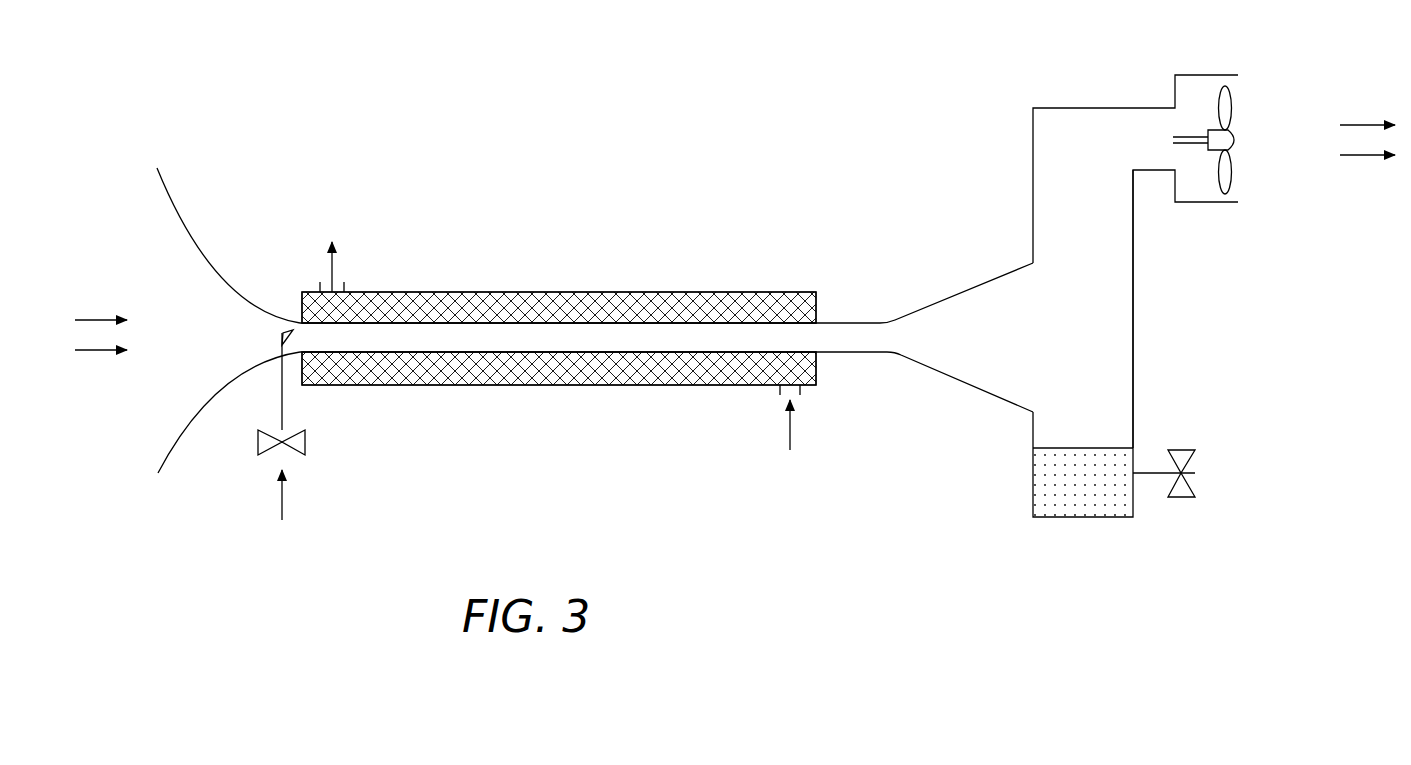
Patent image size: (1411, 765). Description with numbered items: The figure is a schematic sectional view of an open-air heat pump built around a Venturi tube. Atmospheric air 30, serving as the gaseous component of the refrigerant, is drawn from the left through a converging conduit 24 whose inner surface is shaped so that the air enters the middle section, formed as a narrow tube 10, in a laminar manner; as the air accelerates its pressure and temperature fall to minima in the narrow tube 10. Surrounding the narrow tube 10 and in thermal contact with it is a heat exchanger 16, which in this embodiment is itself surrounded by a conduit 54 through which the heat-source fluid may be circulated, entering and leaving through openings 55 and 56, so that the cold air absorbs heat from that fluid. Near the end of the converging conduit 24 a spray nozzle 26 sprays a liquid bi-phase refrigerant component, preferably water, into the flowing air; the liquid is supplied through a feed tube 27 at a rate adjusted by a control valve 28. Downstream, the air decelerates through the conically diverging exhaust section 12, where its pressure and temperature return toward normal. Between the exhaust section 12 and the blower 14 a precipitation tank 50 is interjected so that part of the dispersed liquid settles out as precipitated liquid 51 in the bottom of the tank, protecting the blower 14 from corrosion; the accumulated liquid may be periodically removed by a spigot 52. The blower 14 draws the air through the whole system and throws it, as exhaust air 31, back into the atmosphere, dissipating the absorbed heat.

The narrow tube 10 is at (856, 322).
The exhaust section 12 is at (967, 290).
The blower 14 is at (1240, 175).
The heat exchanger 16 is at (633, 303).
The converging conduit 24 is at (183, 228).
The spray nozzles 26 is at (282, 333).
The feed tube 27 is at (284, 417).
The control valve 28 is at (258, 443).
The atmospheric air 30 is at (93, 320).
The outgoing air flow 31 is at (1340, 125).
The precipitation tank 50 is at (1134, 325).
The precipitated liquid 51 is at (1058, 478).
The spigot 52 is at (1167, 500).
The conduit 54 is at (492, 292).
The opening 55 is at (780, 393).
The opening 56 is at (340, 282).